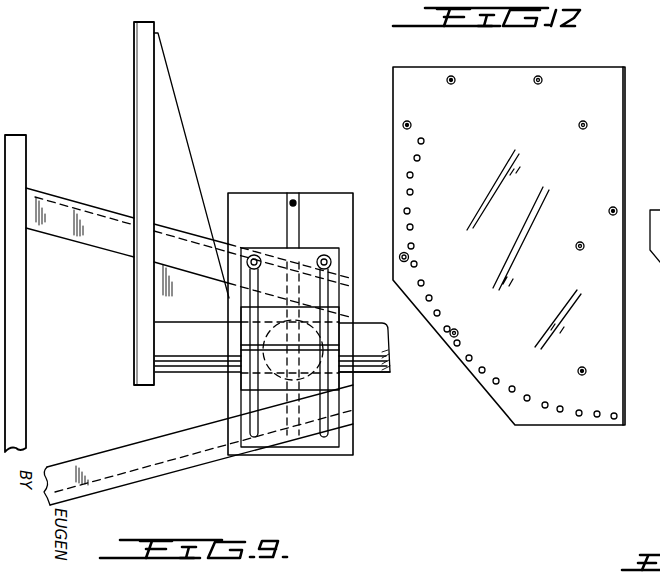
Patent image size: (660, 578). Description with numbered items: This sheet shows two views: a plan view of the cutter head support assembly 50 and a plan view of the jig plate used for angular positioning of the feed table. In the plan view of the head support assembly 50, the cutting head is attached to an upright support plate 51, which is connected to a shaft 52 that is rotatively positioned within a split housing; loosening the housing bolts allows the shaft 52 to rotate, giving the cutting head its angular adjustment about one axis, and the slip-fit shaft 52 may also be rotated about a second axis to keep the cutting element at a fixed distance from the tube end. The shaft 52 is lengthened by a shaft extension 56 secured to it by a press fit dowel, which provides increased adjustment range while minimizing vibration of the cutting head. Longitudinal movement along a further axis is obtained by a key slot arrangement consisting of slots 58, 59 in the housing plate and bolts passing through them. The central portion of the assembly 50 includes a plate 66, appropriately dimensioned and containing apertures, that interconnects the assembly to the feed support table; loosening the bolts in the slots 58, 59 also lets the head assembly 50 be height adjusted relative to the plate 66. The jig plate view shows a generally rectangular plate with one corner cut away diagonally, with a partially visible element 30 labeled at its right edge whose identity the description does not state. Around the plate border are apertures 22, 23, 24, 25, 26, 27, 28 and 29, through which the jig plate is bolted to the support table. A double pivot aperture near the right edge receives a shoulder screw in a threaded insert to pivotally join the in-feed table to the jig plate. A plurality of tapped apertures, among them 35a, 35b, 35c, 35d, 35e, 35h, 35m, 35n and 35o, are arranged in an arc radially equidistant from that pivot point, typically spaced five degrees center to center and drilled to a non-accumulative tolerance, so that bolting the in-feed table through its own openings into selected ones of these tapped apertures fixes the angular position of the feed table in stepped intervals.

In FIG. 9, the head support assembly 50 is at (293, 179).
In FIG. 9, the support plate 51 is at (142, 86).
In FIG. 9, the shaft 52 is at (205, 368).
In FIG. 9, the shaft extension 56 is at (370, 374).
In FIG. 9, the slot 58 is at (247, 294).
In FIG. 9, the slot 59 is at (346, 297).
In FIG. 9, the plate 66 is at (27, 381).
In FIG. 12, the aperture 22 is at (583, 366).
In FIG. 12, the aperture 23 is at (459, 333).
In FIG. 12, the aperture 24 is at (400, 256).
In FIG. 12, the aperture 25 is at (411, 124).
In FIG. 12, the aperture 26 is at (455, 82).
In FIG. 12, the aperture 27 is at (542, 81).
In FIG. 12, the aperture 28 is at (582, 130).
In FIG. 12, the aperture 29 is at (577, 250).
In FIG. 12, the plate 30 is at (615, 159).
In FIG. 12, the tapped aperture 35a is at (425, 141).
In FIG. 12, the tapped aperture 35b is at (421, 158).
In FIG. 12, the tapped aperture 35c is at (414, 175).
In FIG. 12, the tapped aperture 35d is at (414, 192).
In FIG. 12, the tapped aperture 35e is at (411, 211).
In FIG. 12, the tapped aperture 35h is at (425, 283).
In FIG. 12, the tapped aperture 35m is at (486, 367).
In FIG. 12, the tapped aperture 35n is at (500, 380).
In FIG. 12, the tapped aperture 35o is at (611, 414).